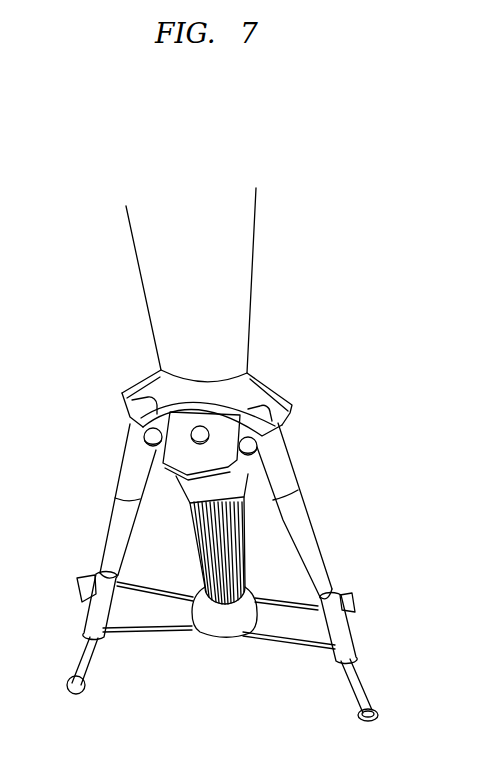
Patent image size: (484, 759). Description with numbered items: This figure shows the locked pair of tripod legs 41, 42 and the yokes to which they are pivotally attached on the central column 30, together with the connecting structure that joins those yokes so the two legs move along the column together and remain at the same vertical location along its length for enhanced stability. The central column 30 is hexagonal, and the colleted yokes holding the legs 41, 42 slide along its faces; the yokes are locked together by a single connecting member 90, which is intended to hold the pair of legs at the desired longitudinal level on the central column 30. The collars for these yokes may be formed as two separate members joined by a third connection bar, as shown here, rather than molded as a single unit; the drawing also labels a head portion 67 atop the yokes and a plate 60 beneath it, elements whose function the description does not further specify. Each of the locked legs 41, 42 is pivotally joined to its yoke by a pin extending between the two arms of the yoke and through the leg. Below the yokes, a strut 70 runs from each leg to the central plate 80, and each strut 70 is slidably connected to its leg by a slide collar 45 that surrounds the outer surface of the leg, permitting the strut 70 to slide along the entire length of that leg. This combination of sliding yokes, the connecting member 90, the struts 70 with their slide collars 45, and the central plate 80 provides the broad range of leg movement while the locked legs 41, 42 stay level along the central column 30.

The central column 30 is at (253, 291).
The head 67 is at (272, 381).
The connecting member 90 is at (128, 442).
The mounting plate 60 is at (176, 479).
The central plate 80 is at (222, 637).
The leg 41 is at (107, 526).
The leg 42 is at (318, 543).
The slide collar 45 is at (85, 610).
The strut 70 is at (158, 598).